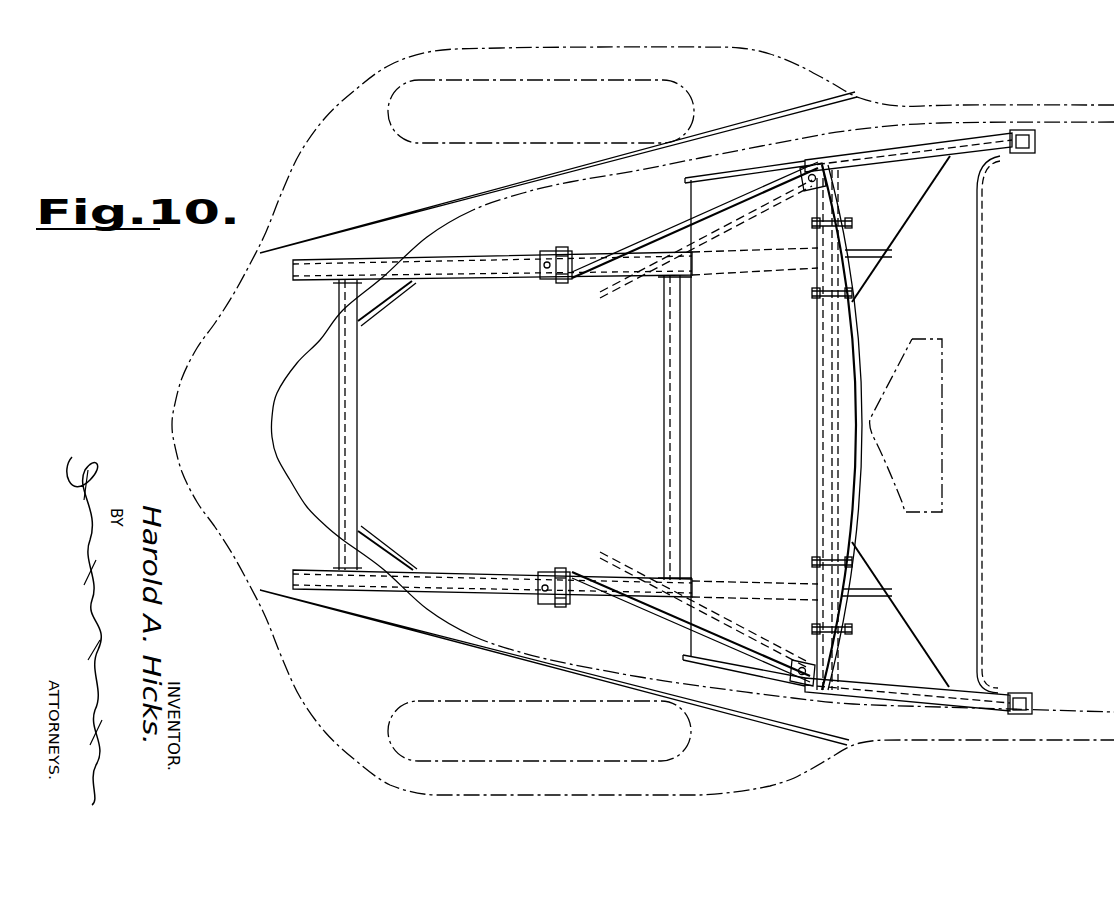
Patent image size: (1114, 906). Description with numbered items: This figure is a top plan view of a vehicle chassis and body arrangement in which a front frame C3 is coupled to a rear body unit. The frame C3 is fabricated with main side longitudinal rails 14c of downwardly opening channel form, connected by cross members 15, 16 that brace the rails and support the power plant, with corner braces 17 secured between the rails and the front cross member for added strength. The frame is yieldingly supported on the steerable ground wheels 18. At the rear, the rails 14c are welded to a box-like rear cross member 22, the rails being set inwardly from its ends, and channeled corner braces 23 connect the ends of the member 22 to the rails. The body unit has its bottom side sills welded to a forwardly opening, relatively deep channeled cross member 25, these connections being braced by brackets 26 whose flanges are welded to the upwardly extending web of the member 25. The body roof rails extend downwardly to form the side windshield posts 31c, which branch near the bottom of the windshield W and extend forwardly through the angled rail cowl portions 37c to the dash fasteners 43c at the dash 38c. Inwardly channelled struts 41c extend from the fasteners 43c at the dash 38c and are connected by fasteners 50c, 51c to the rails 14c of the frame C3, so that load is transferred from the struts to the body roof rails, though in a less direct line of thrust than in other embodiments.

The steerable ground wheel 18 is at (665, 83).
The main side longitudinal rail 14c is at (452, 282).
The cross member 15 is at (360, 414).
The cross member 16 is at (664, 336).
The corner brace 17 is at (360, 548).
The frame C3 is at (466, 572).
The fastener 50c is at (548, 285).
The fastener 51c is at (561, 250).
The strut 41c is at (672, 232).
The channeled corner brace 23 is at (742, 232).
The dash fastener 43c is at (816, 170).
The rear cross member 22 is at (820, 432).
The channeled cross member 25 is at (833, 465).
The dash 38c is at (852, 334).
The angled rail cowl portion 37c is at (858, 170).
The bracket 26 is at (884, 237).
The side windshield post 31c is at (1022, 155).
The windshield W is at (990, 288).